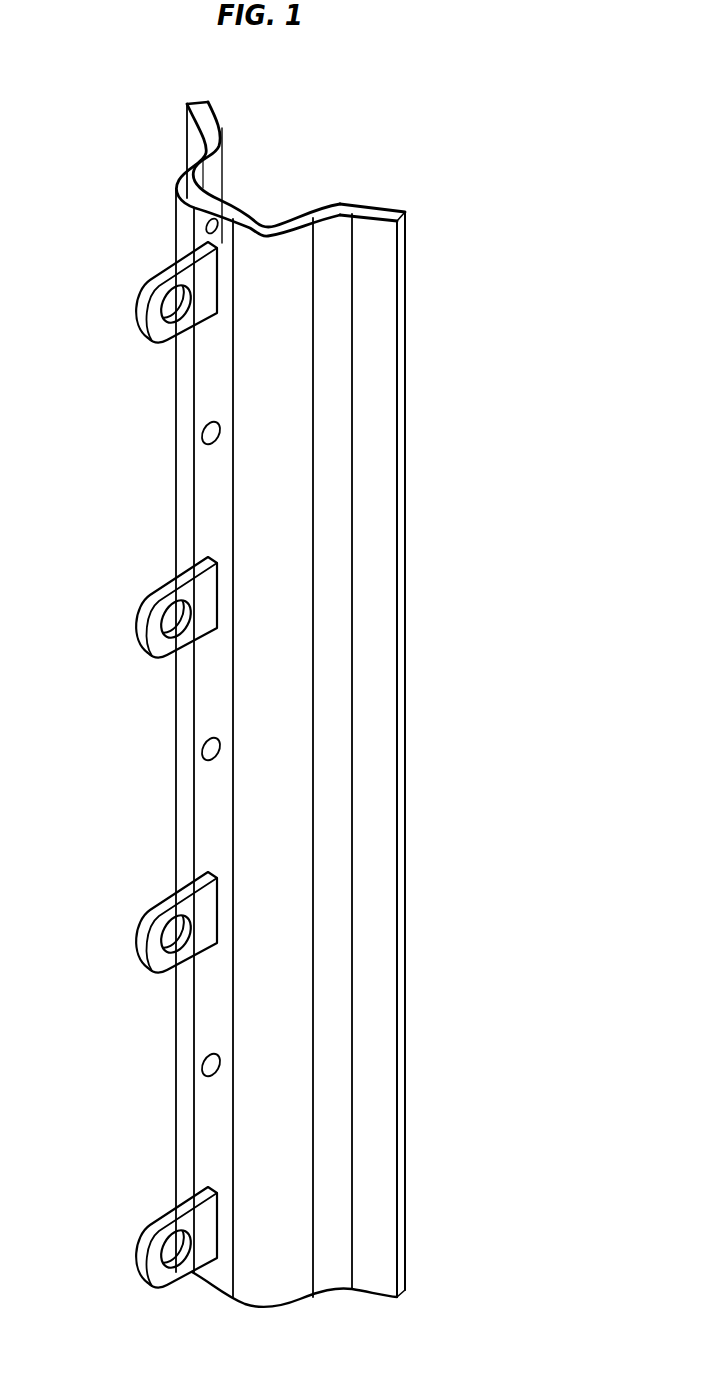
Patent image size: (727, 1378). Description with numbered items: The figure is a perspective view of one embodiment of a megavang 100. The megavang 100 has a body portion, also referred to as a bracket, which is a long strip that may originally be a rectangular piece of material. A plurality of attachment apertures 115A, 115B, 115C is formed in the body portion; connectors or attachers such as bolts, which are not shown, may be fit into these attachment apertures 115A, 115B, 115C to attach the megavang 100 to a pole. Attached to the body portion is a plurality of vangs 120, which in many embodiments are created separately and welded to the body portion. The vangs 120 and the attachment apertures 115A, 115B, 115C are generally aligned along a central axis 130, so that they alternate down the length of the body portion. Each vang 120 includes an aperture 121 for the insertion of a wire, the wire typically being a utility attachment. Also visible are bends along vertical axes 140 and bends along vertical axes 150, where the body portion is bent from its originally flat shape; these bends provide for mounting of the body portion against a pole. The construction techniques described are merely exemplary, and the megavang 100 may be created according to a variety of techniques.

The megavang 100 is at (530, 670).
The attachment aperture 115A is at (203, 432).
The attachment aperture 115B is at (203, 748).
The attachment aperture 115C is at (203, 1064).
The vang 120 is at (148, 760).
The aperture 121 is at (141, 315).
The central axis 130 is at (212, 219).
The vertical axis 140 is at (185, 176).
The vertical axis 150 is at (218, 123).